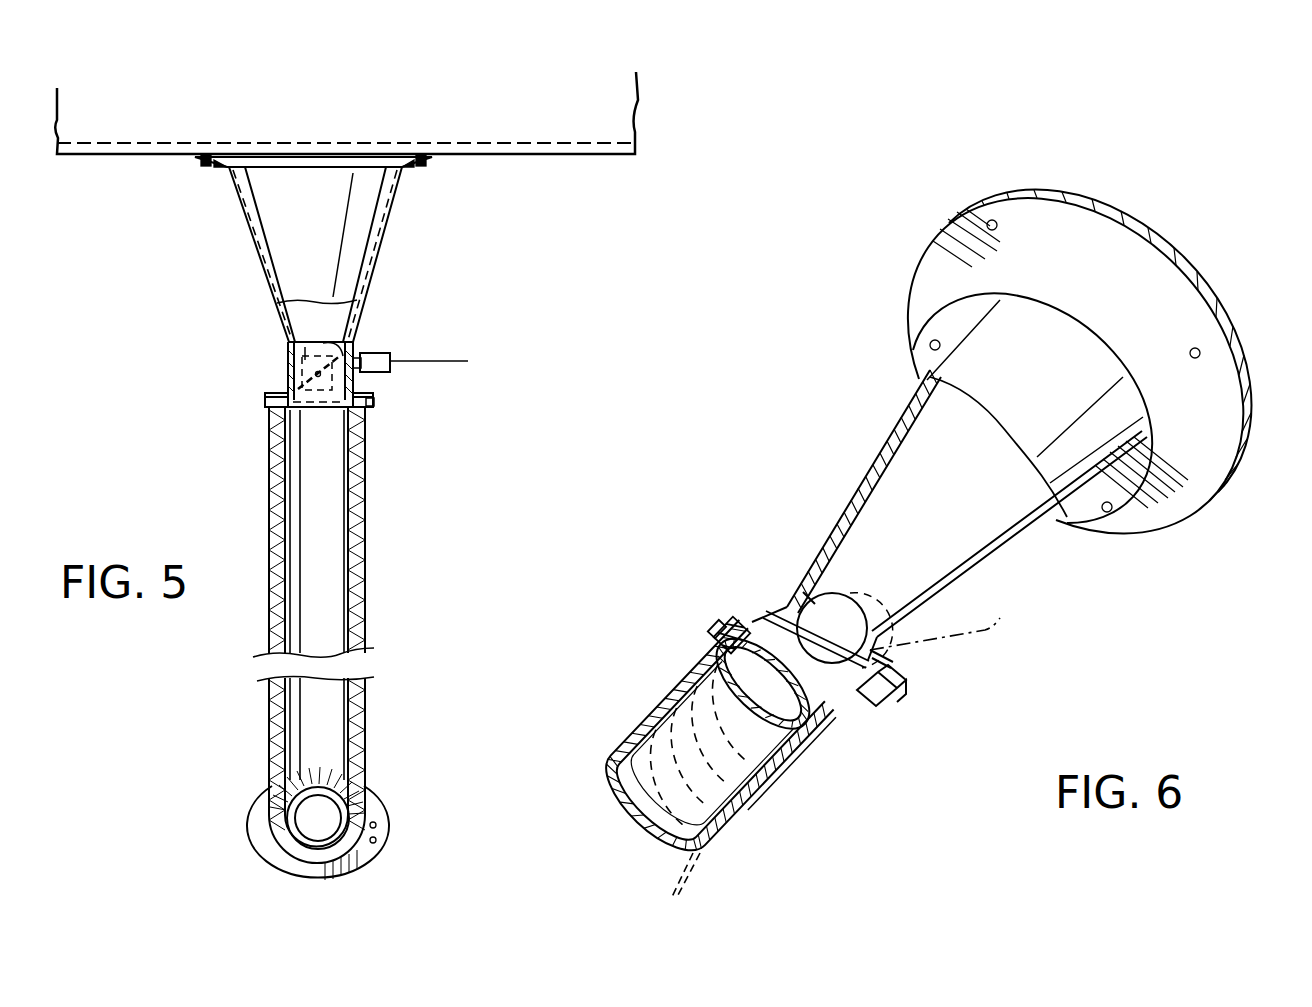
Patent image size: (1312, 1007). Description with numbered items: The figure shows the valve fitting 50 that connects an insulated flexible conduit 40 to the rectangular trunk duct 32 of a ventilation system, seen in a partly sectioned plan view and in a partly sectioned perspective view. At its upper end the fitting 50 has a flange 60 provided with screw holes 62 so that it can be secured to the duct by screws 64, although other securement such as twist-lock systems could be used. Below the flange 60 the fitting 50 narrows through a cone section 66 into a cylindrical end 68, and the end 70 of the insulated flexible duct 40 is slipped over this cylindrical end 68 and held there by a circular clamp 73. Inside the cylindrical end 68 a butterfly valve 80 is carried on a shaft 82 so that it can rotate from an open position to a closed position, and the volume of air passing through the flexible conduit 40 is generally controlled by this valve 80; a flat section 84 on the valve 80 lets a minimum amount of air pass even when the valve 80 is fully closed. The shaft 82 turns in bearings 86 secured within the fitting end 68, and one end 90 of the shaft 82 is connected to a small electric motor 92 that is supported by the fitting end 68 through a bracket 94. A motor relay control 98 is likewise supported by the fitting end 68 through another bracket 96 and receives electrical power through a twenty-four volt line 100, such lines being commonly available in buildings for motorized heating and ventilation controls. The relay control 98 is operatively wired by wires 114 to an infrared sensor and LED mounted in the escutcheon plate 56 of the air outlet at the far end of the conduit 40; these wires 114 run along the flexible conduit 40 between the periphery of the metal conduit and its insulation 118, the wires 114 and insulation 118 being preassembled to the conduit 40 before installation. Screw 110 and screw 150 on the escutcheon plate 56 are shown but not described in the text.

In FIG. 5, the trunk duct 32 is at (505, 108).
In FIG. 5, the flexible conduit 40 is at (367, 583).
In FIG. 6, the flexible conduit 40 is at (667, 712).
In FIG. 5, the fitting 50 is at (387, 239).
In FIG. 6, the fitting 50 is at (1062, 663).
In FIG. 5, the escutcheon plate 56 is at (363, 793).
In FIG. 5, the flange 60 is at (423, 164).
In FIG. 6, the flange 60 is at (1177, 300).
In FIG. 6, the screw holes 62 is at (927, 346).
In FIG. 5, the screws 64 is at (213, 166).
In FIG. 5, the cone section 66 is at (252, 240).
In FIG. 6, the cone section 66 is at (887, 446).
In FIG. 5, the cylindrical end 68 is at (288, 370).
In FIG. 6, the cylindrical end 68 is at (773, 620).
In FIG. 5, the end of insulated flexible duct 70 is at (272, 398).
In FIG. 6, the end of insulated flexible duct 70 is at (717, 647).
In FIG. 5, the circular clamp 73 is at (372, 406).
In FIG. 6, the circular clamp 73 is at (718, 627).
In FIG. 5, the butterfly valve 80 is at (288, 377).
In FIG. 6, the butterfly valve 80 is at (863, 597).
In FIG. 6, the shaft 82 is at (792, 600).
In FIG. 6, the flat section 84 is at (801, 660).
In FIG. 6, the bearings 86 is at (793, 597).
In FIG. 6, the end of shaft 90 is at (897, 683).
In FIG. 5, the electric motor 92 is at (274, 323).
In FIG. 6, the electric motor 92 is at (857, 693).
In FIG. 6, the bracket 94 is at (873, 727).
In FIG. 5, the bracket 96 is at (333, 357).
In FIG. 5, the motor relay control 98 is at (363, 372).
In FIG. 6, the motor relay control 98 is at (862, 612).
In FIG. 5, the 24 volt line 100 is at (392, 361).
In FIG. 6, the 24 volt line 100 is at (1000, 618).
In FIG. 5, the screw 110 is at (375, 842).
In FIG. 5, the wires 114 is at (370, 381).
In FIG. 6, the wires 114 is at (823, 733).
In FIG. 5, the insulation 118 is at (367, 623).
In FIG. 6, the insulation 118 is at (627, 747).
In FIG. 5, the screw 150 is at (377, 822).